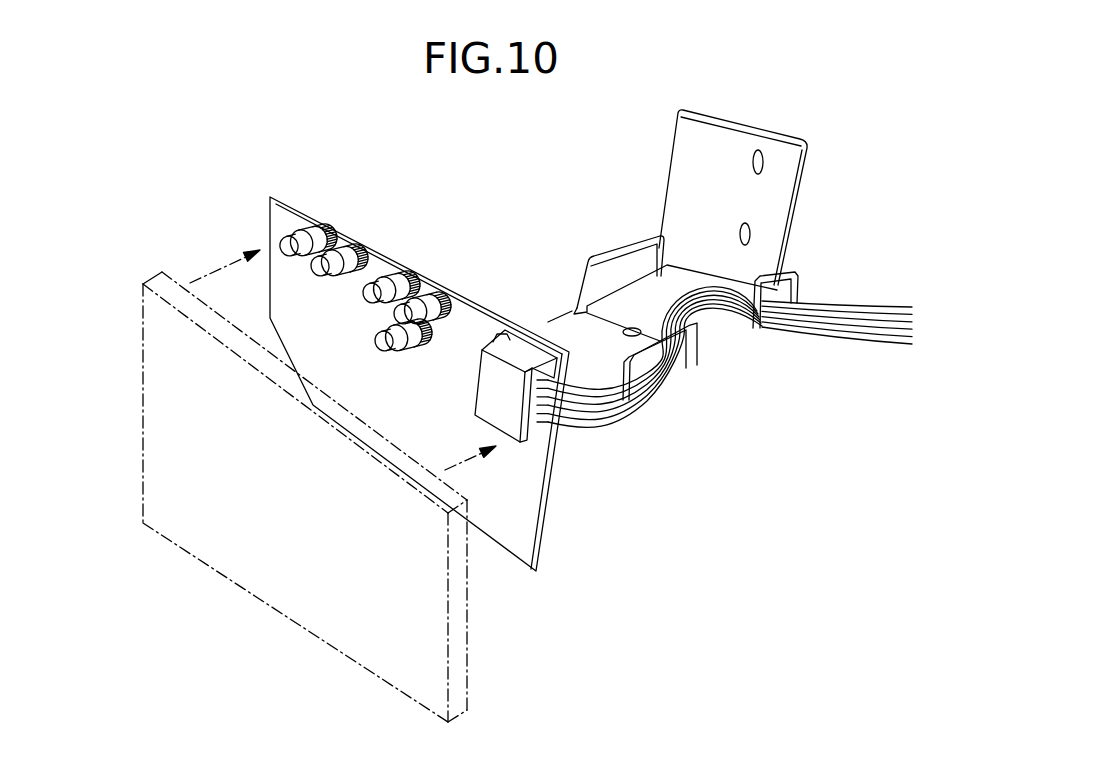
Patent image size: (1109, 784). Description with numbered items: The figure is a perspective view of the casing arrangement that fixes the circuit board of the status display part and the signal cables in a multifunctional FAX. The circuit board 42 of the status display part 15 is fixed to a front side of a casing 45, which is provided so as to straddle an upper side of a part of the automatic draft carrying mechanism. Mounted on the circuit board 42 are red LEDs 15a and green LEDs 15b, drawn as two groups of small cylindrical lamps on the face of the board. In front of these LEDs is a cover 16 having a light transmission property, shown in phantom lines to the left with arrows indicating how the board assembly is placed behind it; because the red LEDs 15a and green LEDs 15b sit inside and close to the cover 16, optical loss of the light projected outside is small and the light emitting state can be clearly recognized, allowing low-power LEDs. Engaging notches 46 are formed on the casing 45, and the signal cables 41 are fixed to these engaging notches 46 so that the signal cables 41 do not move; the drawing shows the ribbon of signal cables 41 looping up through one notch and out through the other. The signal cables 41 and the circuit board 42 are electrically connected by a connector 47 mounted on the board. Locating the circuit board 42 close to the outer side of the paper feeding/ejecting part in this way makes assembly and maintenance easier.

The status display part 15 is at (423, 360).
The red LEDs 15a is at (332, 240).
The green LEDs 15b is at (415, 287).
The cover 16 is at (143, 377).
The signal cables 41 is at (593, 420).
The circuit board 42 is at (518, 523).
The casing 45 is at (773, 210).
The engaging notches 46 is at (768, 281).
The connector 47 is at (517, 350).